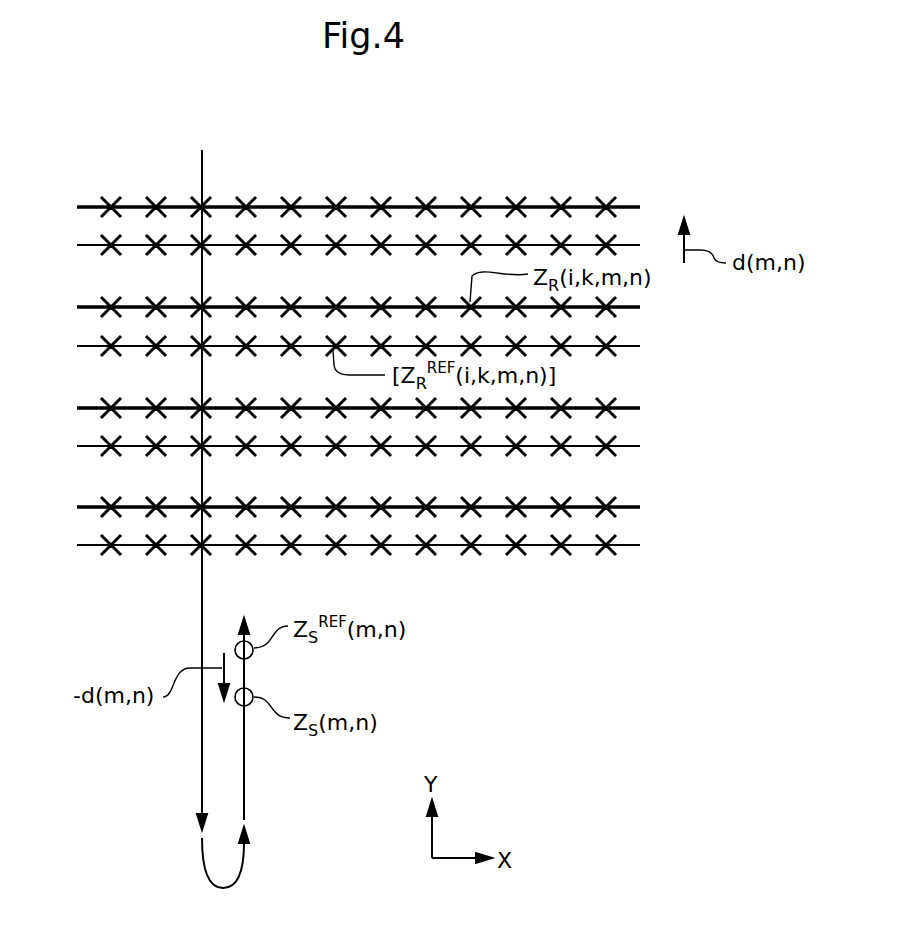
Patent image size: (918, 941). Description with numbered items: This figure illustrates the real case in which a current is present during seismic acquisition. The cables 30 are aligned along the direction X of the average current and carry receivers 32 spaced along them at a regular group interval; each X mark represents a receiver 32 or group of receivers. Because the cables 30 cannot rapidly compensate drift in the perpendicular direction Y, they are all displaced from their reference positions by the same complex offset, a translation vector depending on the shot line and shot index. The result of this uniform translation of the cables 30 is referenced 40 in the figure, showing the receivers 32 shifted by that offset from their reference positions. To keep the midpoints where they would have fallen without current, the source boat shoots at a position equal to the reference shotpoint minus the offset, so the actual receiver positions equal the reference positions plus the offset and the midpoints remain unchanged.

The cables 30 is at (632, 308).
The receivers 32 is at (425, 302).
The translated cables 40 is at (628, 447).